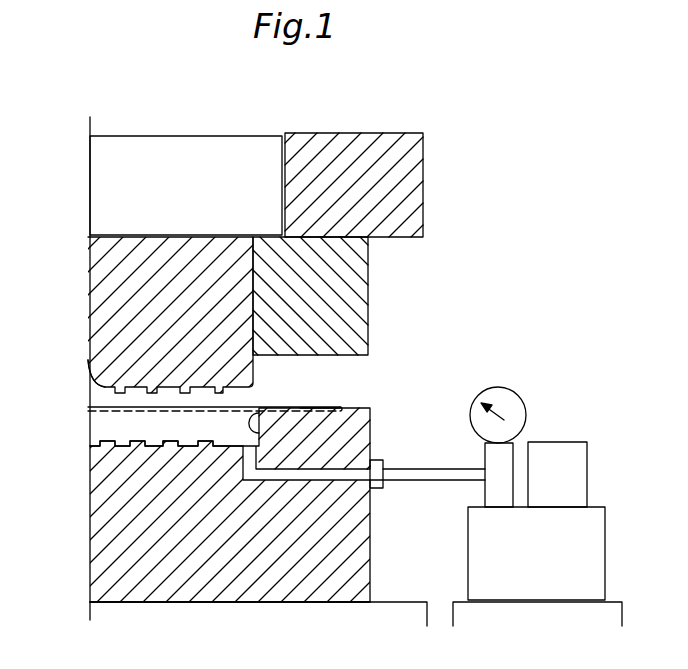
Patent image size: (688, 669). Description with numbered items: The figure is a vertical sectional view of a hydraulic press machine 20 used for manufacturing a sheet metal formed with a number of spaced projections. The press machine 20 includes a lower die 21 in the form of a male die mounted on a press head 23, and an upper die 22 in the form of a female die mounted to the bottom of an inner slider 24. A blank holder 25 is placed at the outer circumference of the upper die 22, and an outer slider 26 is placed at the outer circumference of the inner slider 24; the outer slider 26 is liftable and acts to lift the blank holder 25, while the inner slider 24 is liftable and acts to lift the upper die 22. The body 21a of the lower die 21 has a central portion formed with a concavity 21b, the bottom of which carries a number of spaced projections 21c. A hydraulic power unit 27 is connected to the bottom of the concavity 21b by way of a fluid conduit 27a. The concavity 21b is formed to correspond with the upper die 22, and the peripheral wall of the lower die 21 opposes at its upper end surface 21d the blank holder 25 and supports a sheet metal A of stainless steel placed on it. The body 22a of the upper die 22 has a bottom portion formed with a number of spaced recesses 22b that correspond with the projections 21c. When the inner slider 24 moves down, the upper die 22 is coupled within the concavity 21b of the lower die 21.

The hydraulic press machine 20 is at (224, 339).
The lower die 21 is at (234, 532).
The body of lower die 21a is at (278, 604).
The concavity 21b is at (253, 410).
The spaced projections 21c is at (98, 449).
The upper end surface 21d is at (372, 408).
The upper die 22 is at (139, 307).
The body of upper die 22a is at (120, 292).
The spaced recesses 22b is at (100, 388).
The press head 23 is at (390, 614).
The inner slider 24 is at (214, 152).
The blank holder 25 is at (340, 300).
The outer slider 26 is at (348, 146).
The hydraulic power unit 27 is at (590, 545).
The fluid conduit 27a is at (413, 475).
The sheet metal A is at (325, 408).